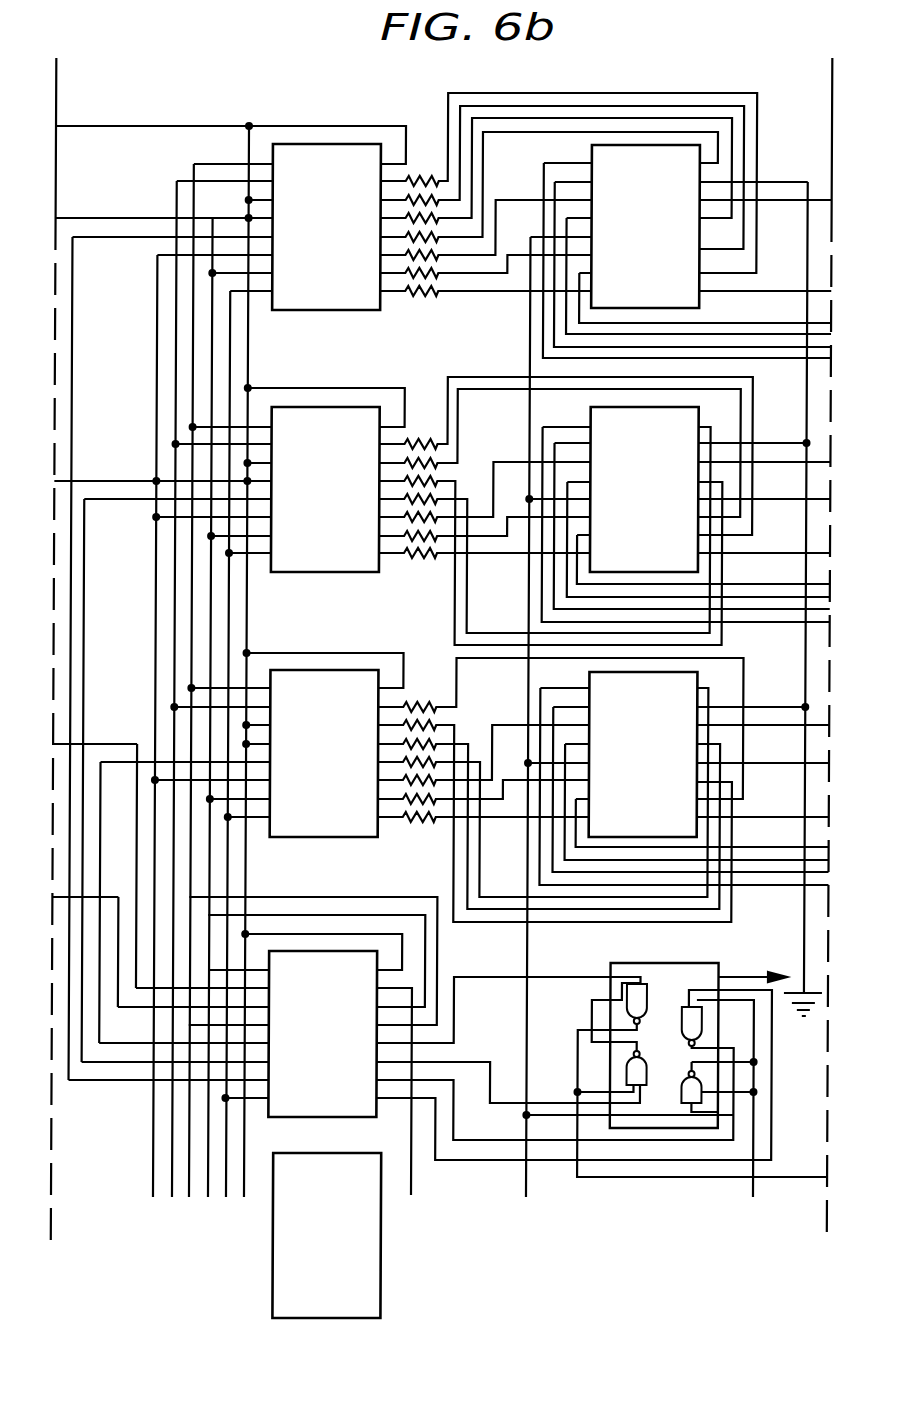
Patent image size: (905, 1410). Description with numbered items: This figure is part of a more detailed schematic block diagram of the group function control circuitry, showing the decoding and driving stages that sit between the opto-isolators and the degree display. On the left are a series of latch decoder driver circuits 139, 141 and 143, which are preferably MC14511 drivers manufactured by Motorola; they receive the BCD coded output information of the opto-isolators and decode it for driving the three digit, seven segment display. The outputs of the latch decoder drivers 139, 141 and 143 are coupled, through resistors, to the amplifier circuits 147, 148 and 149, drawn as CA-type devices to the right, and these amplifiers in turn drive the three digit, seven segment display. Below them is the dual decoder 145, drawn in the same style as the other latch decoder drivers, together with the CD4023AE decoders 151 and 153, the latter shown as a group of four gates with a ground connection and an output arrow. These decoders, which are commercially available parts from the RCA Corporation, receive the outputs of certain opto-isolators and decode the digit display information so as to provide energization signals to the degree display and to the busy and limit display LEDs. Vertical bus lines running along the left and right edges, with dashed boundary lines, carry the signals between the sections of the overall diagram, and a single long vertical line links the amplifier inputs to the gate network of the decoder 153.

The latch decoder driver circuit 139 is at (350, 293).
The latch decoder driver circuit 141 is at (350, 556).
The latch decoder driver circuit 143 is at (350, 819).
The dual 104 decoder 145 is at (350, 1103).
The amplifier circuit 147 is at (645, 226).
The amplifier circuit 148 is at (644, 489).
The amplifier circuit 149 is at (643, 754).
The CD4023AE decoder 151 is at (326, 1235).
The CD4023AE decoder 153 is at (668, 1128).